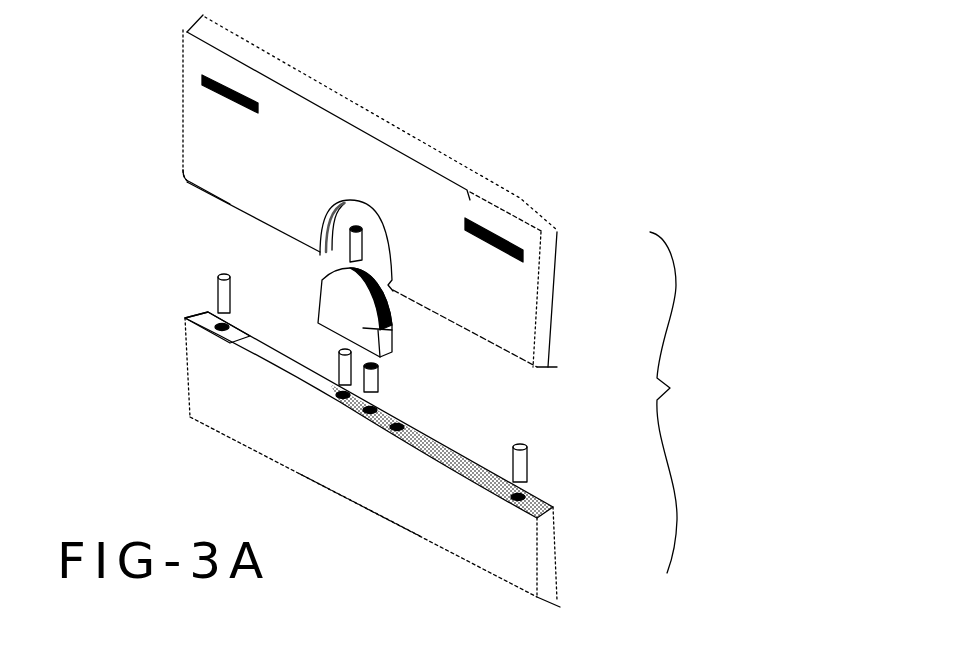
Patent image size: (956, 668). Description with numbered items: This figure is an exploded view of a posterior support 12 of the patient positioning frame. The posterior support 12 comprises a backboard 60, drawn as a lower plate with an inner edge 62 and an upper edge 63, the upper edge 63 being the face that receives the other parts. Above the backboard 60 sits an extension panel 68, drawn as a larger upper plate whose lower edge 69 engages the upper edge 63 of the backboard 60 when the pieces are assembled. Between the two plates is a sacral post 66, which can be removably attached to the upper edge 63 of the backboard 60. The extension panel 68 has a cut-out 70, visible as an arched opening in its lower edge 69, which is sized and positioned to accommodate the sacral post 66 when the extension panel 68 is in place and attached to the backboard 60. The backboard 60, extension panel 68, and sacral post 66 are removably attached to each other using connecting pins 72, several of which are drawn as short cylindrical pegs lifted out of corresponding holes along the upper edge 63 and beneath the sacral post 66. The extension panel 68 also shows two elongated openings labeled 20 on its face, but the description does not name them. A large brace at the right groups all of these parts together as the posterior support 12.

The posterior support 12 is at (698, 402).
The slot 20 is at (223, 75).
The backboard 60 is at (487, 555).
The inner edge 62 is at (362, 507).
The upper edge 63 is at (235, 342).
The sacral post 66 is at (385, 331).
The extension panel 68 is at (202, 133).
The lower edge 69 is at (200, 182).
The cut-out 70 is at (353, 218).
The connecting pins 72 is at (347, 258).